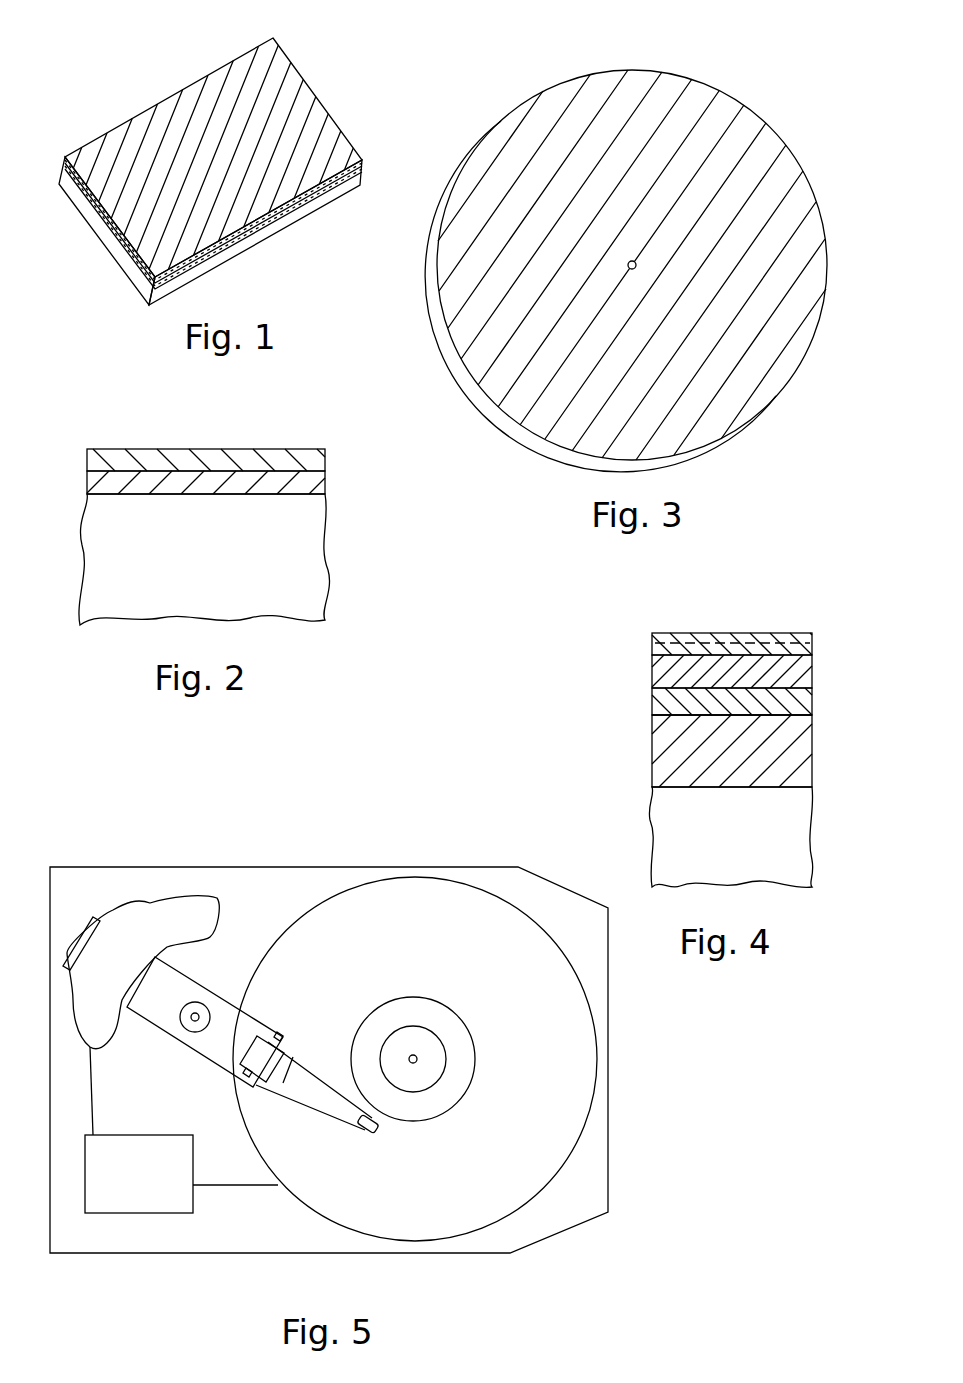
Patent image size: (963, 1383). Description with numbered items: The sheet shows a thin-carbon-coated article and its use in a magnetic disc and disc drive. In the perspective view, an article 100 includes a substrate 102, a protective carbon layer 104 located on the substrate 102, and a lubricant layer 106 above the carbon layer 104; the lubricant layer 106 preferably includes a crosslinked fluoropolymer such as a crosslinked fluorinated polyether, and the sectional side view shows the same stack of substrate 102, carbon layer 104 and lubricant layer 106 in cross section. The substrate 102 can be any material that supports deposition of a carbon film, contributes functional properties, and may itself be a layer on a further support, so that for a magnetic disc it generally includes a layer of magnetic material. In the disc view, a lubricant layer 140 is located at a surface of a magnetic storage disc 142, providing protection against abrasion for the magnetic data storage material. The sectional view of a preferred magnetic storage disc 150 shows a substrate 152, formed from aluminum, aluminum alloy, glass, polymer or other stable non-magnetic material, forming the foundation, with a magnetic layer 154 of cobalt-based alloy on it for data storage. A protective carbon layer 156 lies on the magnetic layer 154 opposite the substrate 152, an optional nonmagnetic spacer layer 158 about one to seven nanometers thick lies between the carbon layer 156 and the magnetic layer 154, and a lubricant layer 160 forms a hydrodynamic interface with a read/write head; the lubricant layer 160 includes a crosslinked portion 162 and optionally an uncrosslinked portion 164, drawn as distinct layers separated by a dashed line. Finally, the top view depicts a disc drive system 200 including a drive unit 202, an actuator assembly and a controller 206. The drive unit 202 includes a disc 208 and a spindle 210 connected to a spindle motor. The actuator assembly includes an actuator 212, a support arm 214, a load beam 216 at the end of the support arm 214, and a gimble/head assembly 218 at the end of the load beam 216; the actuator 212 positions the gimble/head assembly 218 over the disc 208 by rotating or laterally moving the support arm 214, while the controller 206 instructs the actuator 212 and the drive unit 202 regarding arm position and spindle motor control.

In FIG. 1, the article 100 is at (316, 62).
In FIG. 1, the substrate 102 is at (270, 227).
In FIG. 2, the substrate 102 is at (323, 570).
In FIG. 1, the carbon layer 104 is at (323, 190).
In FIG. 2, the carbon layer 104 is at (323, 480).
In FIG. 5, the carbon layer 104 is at (113, 905).
In FIG. 1, the lubricant layer 106 is at (348, 152).
In FIG. 2, the lubricant layer 106 is at (233, 450).
In FIG. 3, the lubricant layer 140 is at (548, 459).
In FIG. 3, the magnetic storage disc 142 is at (768, 108).
In FIG. 4, the magnetic storage disc 150 is at (823, 760).
In FIG. 4, the substrate 152 is at (658, 828).
In FIG. 4, the magnetic layer 154 is at (653, 758).
In FIG. 4, the protective carbon layer 156 is at (650, 683).
In FIG. 4, the spacer layer 158 is at (650, 705).
In FIG. 4, the lubricant layer 160 is at (757, 635).
In FIG. 4, the crosslinked portion 162 is at (650, 652).
In FIG. 4, the uncrosslinked portion 164 is at (650, 638).
In FIG. 5, the disc drive system 200 is at (572, 1243).
In FIG. 5, the drive unit 202 is at (486, 888).
In FIG. 5, the controller 206 is at (128, 1207).
In FIG. 5, the disc 208 is at (578, 1075).
In FIG. 5, the spindle 210 is at (413, 1059).
In FIG. 5, the actuator 212 is at (192, 907).
In FIG. 5, the support arm 214 is at (90, 1047).
In FIG. 5, the load beam 216 is at (313, 1100).
In FIG. 5, the gimble/head assembly 218 is at (358, 1133).